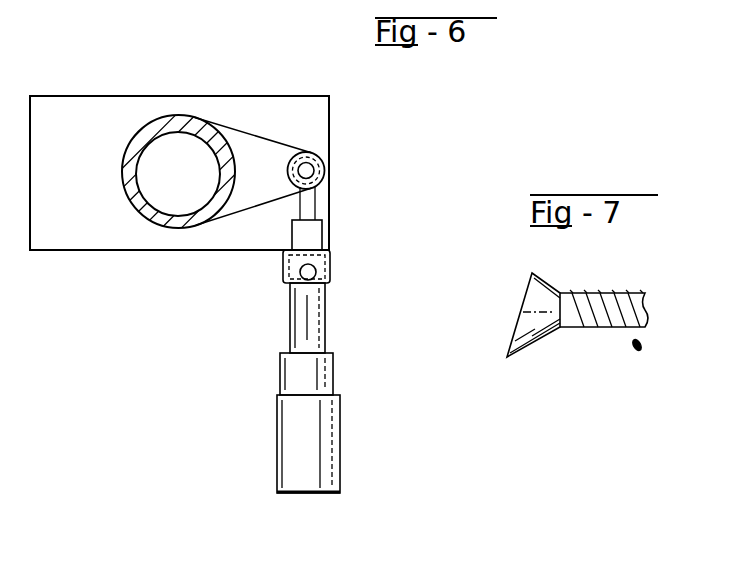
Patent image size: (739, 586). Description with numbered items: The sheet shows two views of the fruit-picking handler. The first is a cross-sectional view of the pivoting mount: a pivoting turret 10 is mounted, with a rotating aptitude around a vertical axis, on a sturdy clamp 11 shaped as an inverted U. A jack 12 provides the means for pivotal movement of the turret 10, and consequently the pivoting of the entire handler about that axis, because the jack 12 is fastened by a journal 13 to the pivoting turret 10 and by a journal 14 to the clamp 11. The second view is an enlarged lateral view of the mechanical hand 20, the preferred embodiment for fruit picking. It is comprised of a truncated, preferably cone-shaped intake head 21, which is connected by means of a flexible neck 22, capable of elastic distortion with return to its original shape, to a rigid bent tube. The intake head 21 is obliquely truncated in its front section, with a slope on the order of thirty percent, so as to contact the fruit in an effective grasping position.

In FIG. 6, the pivoting turret 10 is at (185, 122).
In FIG. 6, the clamp 11 is at (256, 118).
In FIG. 6, the jack 12 is at (292, 315).
In FIG. 6, the journal 13 is at (306, 171).
In FIG. 6, the journal 14 is at (304, 274).
In FIG. 7, the mechanical hand 20 is at (639, 350).
In FIG. 7, the intake head 21 is at (543, 340).
In FIG. 7, the flexible neck 22 is at (590, 327).